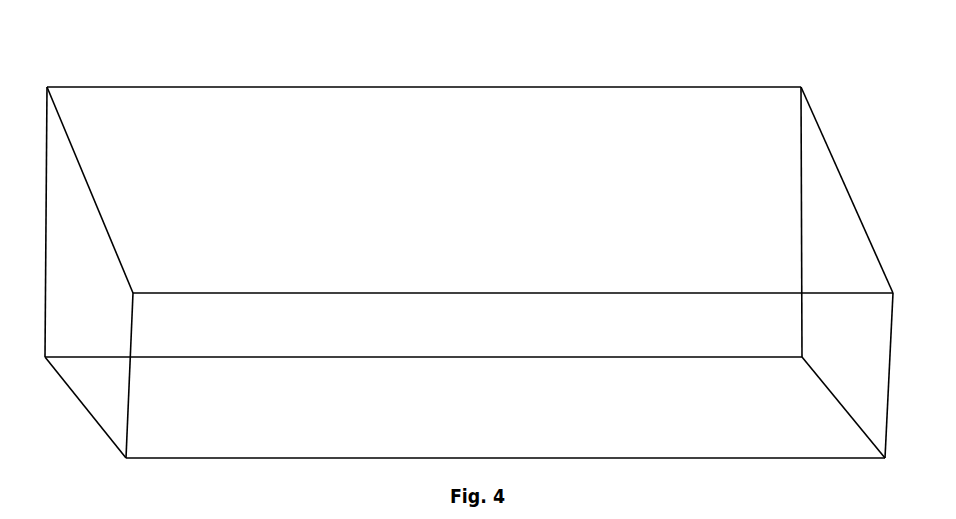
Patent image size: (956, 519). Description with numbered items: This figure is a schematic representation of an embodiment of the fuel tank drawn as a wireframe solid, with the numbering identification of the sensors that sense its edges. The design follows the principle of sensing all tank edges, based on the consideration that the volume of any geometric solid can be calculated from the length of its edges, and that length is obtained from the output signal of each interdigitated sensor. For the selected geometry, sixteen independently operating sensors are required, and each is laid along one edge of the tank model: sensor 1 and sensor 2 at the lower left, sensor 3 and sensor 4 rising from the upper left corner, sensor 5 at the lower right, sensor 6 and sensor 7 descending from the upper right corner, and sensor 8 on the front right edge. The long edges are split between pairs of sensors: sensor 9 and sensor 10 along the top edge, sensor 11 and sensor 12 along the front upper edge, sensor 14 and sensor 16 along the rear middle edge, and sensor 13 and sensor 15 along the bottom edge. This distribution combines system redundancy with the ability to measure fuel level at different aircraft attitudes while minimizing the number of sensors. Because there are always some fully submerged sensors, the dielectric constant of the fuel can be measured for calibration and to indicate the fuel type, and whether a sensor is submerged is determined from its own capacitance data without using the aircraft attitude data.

The sensor 1 is at (139, 375).
The sensor 2 is at (85, 407).
The sensor 3 is at (56, 222).
The sensor 4 is at (90, 190).
The sensor 5 is at (843, 407).
The sensor 6 is at (788, 222).
The sensor 7 is at (847, 190).
The sensor 8 is at (897, 375).
The sensor 9 is at (235, 74).
The sensor 10 is at (612, 75).
The sensor 11 is at (323, 277).
The sensor 12 is at (703, 276).
The sensor 13 is at (315, 445).
The sensor 14 is at (234, 340).
The sensor 15 is at (695, 443).
The sensor 16 is at (612, 341).